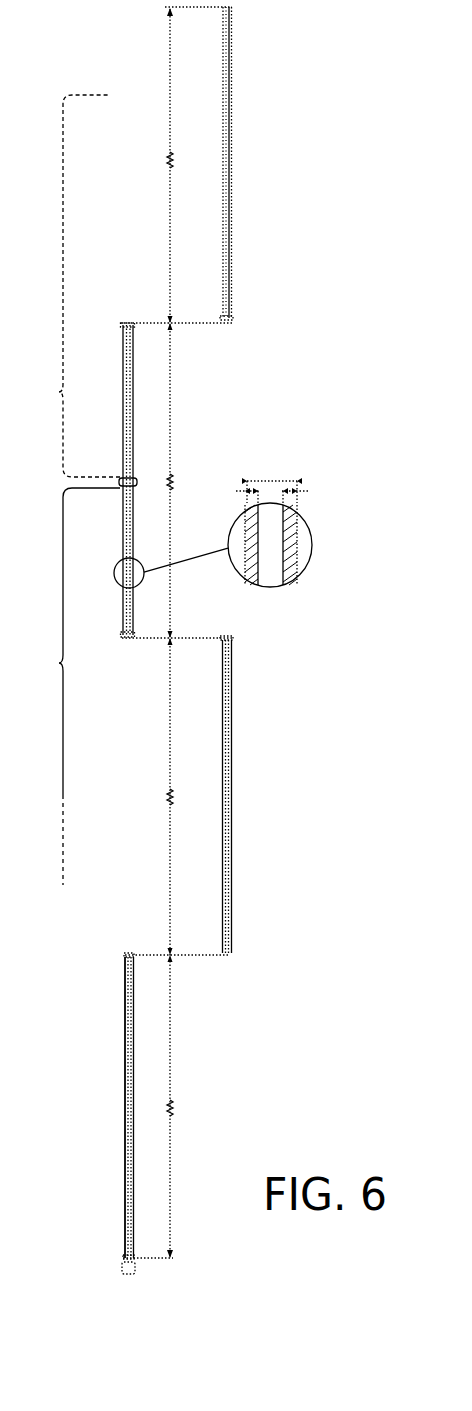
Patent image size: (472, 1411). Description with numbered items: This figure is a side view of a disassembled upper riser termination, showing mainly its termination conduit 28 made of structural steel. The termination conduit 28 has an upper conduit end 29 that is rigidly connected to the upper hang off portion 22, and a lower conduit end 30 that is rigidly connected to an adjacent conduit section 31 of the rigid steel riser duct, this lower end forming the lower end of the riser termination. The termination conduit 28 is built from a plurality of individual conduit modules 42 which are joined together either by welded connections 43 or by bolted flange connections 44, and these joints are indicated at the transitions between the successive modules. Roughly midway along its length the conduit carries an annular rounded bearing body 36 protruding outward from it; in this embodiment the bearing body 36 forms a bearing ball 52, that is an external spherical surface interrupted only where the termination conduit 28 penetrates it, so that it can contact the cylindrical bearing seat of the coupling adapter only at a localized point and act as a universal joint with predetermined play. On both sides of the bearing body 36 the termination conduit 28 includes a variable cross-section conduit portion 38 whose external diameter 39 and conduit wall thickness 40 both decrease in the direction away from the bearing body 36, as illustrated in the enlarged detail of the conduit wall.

The upper hang off portion 22 is at (136, 1267).
The termination conduit 28 is at (238, 896).
The upper conduit end 29 is at (124, 1257).
The lower conduit end 30 is at (228, 88).
The adjacent conduit section 31 is at (228, 58).
The bearing body 36 is at (125, 478).
The variable cross-section conduit portion 38 is at (58, 392).
The external diameter 39 is at (272, 480).
The conduit wall thickness 40 is at (236, 490).
The conduit modules 42 is at (244, 222).
The welded connection 43 is at (234, 959).
The bolted flange connection 44 is at (236, 327).
The bearing ball 52 is at (135, 481).